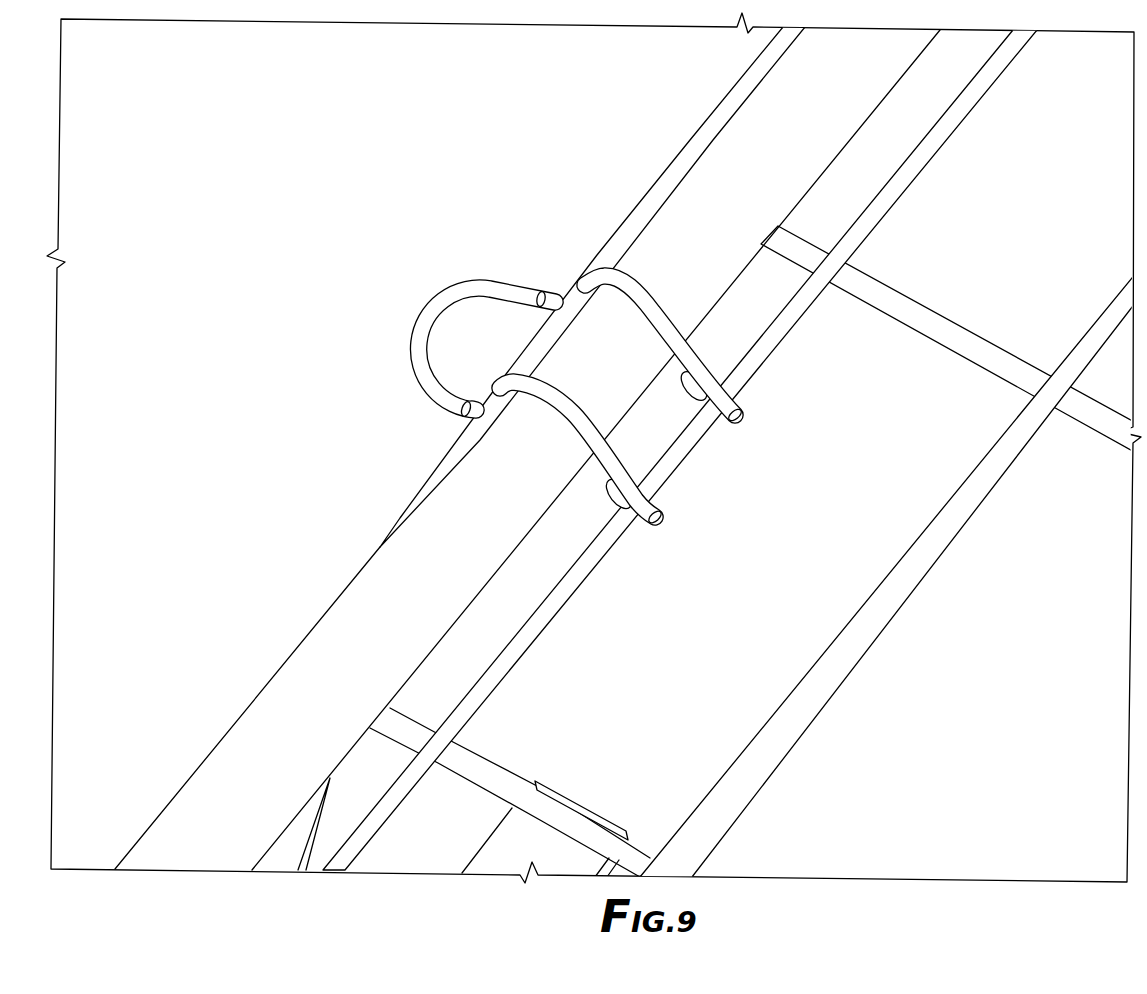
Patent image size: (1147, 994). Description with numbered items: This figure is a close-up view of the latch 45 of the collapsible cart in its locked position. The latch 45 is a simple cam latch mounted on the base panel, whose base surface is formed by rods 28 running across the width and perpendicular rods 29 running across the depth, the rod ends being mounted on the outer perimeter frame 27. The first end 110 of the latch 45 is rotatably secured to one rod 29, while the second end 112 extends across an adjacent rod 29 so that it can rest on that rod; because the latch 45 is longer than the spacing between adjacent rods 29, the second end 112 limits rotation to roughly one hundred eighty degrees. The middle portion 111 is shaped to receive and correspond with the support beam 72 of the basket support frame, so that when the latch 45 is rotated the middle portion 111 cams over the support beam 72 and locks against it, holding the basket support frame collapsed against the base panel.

The outer perimeter frame 27 is at (443, 453).
The rods 28 is at (990, 362).
The rods 29 is at (555, 614).
The latch 45 is at (562, 394).
The support beam 72 is at (373, 608).
The first end 110 is at (744, 425).
The middle portion 111 is at (634, 291).
The second end 112 is at (440, 312).